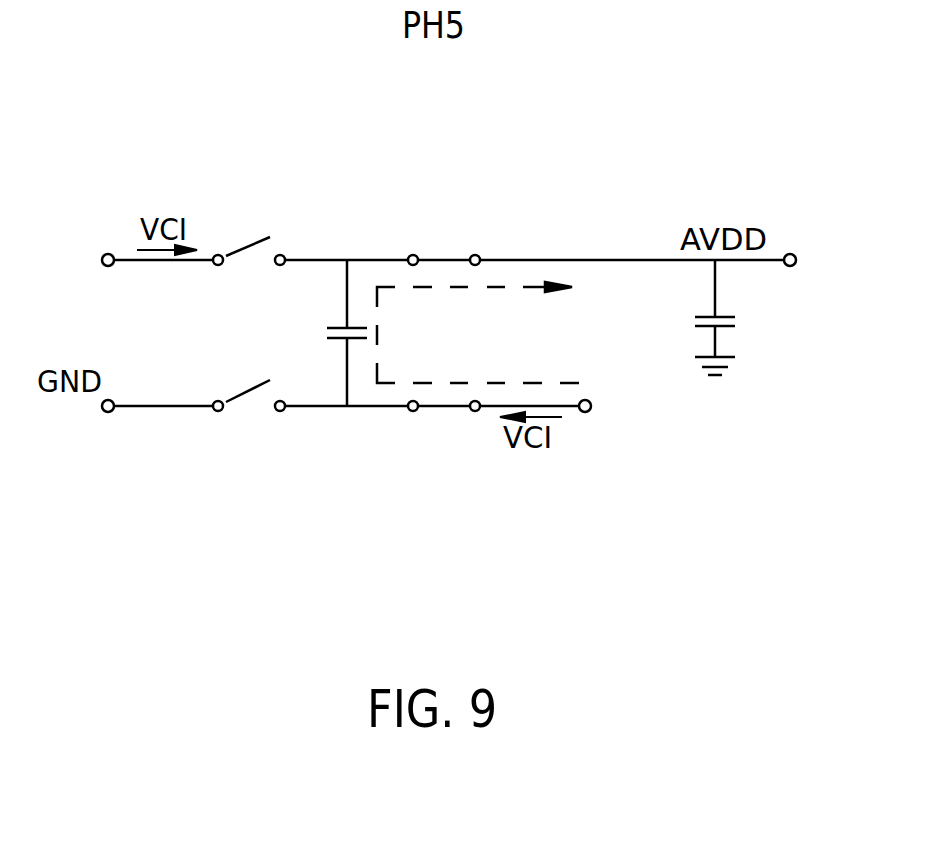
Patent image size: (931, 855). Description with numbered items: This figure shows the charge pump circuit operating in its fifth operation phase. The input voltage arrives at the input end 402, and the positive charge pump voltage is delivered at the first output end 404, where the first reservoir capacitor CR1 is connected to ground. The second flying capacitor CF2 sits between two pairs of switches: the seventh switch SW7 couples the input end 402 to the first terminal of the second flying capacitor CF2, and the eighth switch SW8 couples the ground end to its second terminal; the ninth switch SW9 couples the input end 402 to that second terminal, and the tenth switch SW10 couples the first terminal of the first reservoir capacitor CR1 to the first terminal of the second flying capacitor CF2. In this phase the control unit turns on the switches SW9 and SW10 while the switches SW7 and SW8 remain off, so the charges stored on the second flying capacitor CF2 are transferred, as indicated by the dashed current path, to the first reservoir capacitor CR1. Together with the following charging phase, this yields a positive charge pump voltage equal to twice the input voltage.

The input end 402 is at (107, 253).
The first output end 404 is at (793, 253).
The seventh switch SW7 is at (248, 232).
The eighth switch SW8 is at (248, 416).
The ninth switch SW9 is at (444, 426).
The tenth switch SW10 is at (439, 236).
The second flying capacitor CF2 is at (322, 327).
The first reservoir capacitor CR1 is at (739, 339).